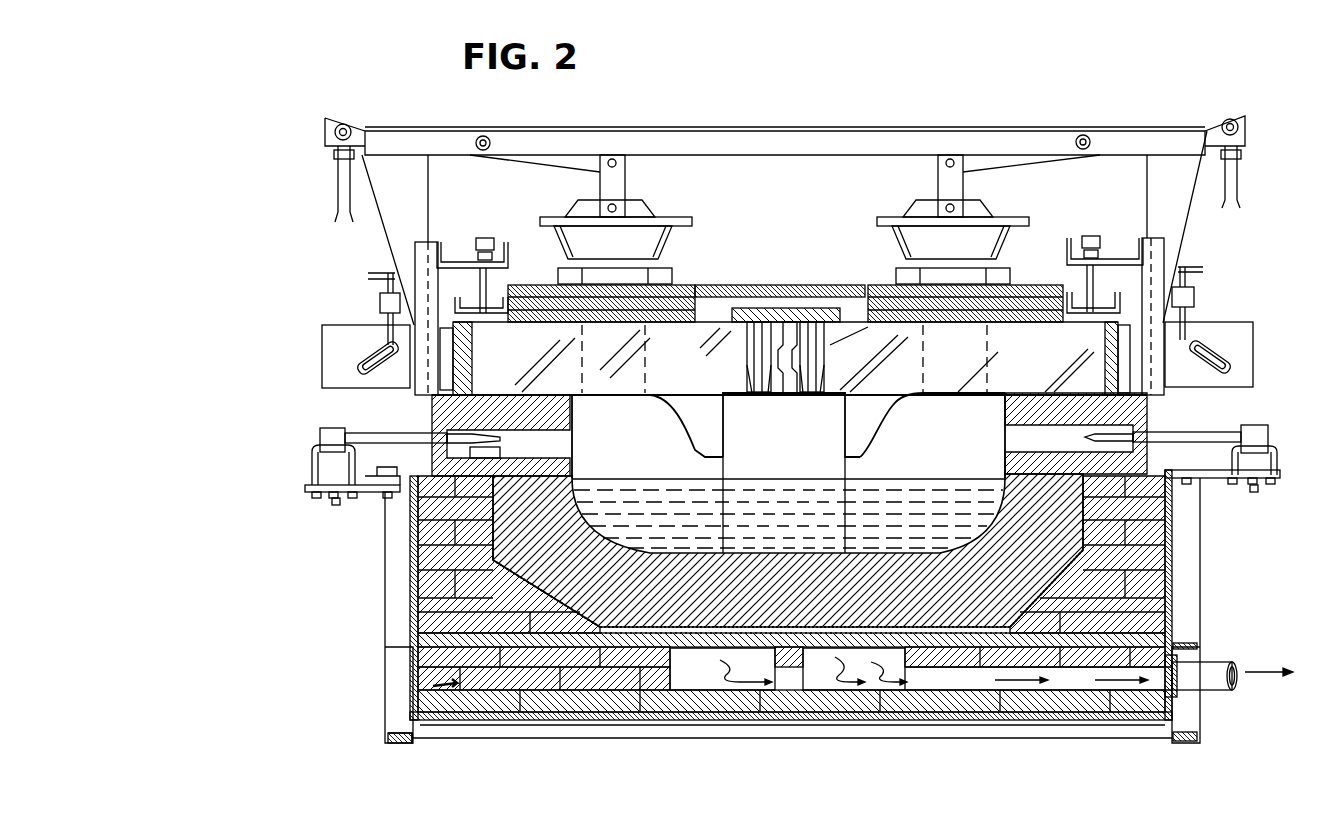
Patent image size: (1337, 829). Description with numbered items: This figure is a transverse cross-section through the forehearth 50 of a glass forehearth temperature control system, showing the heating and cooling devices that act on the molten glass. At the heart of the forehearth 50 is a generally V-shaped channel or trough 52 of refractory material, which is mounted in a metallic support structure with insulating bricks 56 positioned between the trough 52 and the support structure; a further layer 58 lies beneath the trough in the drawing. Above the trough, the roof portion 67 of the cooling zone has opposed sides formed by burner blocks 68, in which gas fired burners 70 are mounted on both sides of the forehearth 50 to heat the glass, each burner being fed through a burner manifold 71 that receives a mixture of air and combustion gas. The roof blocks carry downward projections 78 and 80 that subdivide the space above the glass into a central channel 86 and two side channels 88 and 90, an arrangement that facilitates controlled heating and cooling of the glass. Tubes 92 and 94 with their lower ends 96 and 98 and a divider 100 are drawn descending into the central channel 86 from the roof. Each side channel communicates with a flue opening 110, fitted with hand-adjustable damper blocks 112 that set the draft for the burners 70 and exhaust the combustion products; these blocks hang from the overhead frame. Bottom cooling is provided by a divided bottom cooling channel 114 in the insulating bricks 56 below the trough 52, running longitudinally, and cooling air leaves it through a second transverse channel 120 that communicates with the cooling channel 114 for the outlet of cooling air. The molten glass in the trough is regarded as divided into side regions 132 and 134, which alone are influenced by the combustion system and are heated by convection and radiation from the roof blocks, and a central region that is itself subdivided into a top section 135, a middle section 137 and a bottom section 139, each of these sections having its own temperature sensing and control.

The forehearth 50 is at (352, 643).
The channel or trough 52 is at (548, 565).
The insulating bricks 56 is at (433, 685).
The insulating layer 58 is at (625, 632).
The roof portion 67 is at (690, 273).
The burner blocks 68 is at (470, 405).
The gas fired burners 70 is at (433, 455).
The burner manifolds 71 is at (334, 470).
The downward projection 78 is at (877, 443).
The downward projection 80 is at (683, 415).
The central channel 86 is at (776, 432).
The side channel 88 is at (953, 433).
The side channel 90 is at (603, 434).
The feed tube 92 is at (835, 322).
The feed tube 94 is at (760, 322).
The nozzle 96 is at (790, 352).
The nozzle 98 is at (773, 351).
The divider 100 is at (800, 312).
The flue openings 110 is at (976, 336).
The damper blocks 112 is at (650, 245).
The bottom cooling channel 114 is at (708, 662).
The second transverse channel 120 is at (1064, 683).
The side region 132 is at (640, 460).
The side region 134 is at (945, 515).
The top section 135 is at (760, 520).
The middle section 137 is at (812, 478).
The bottom section 139 is at (800, 543).